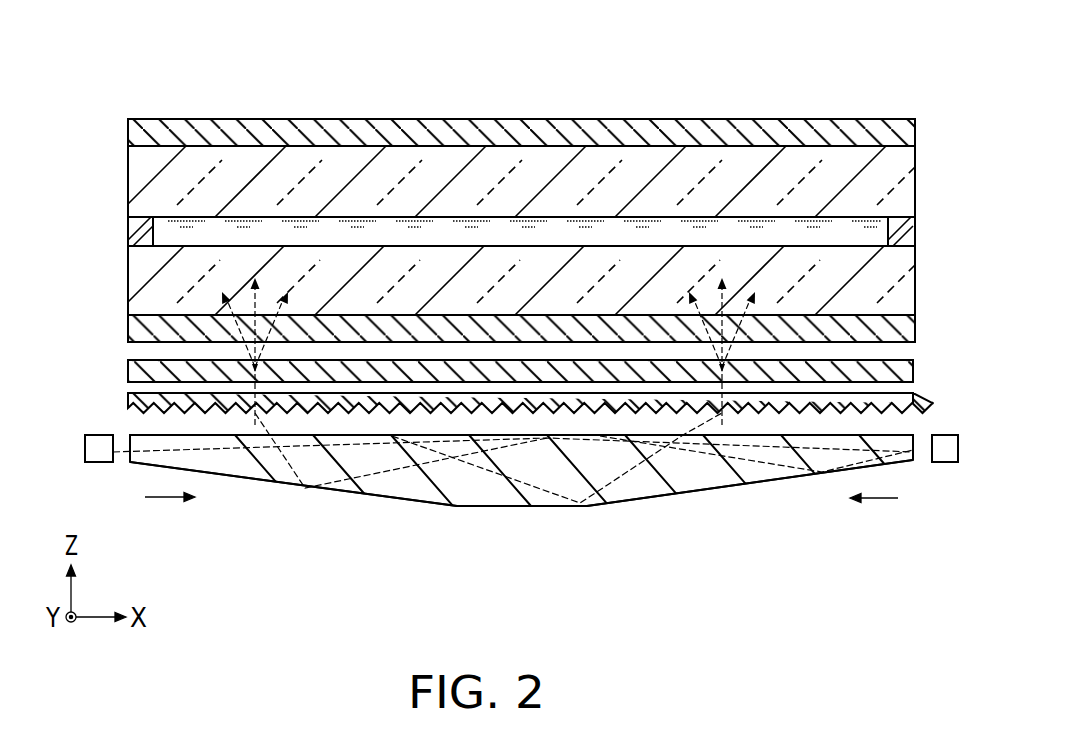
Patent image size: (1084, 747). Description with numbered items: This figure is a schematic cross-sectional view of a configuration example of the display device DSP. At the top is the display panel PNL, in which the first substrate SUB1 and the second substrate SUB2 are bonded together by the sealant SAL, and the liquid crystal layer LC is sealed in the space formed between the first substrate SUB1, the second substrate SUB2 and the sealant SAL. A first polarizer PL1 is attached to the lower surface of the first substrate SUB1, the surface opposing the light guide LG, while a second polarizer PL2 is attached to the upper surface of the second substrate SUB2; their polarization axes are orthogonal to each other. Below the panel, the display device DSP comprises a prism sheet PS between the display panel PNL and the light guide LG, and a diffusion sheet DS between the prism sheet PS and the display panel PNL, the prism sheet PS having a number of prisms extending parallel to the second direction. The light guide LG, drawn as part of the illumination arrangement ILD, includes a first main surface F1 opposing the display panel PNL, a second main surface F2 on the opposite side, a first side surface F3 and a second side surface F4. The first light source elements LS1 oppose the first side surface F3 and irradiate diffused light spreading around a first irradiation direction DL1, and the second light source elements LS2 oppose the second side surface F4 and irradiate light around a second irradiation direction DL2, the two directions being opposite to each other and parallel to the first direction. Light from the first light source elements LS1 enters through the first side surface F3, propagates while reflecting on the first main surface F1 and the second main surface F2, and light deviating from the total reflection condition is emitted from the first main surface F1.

The display device DSP is at (134, 80).
The display panel PNL is at (874, 106).
The second polarizer PL2 is at (128, 126).
The second substrate SUB2 is at (787, 165).
The liquid crystal layer LC is at (718, 235).
The first substrate SUB1 is at (641, 280).
The sealant SAL is at (128, 225).
The first polarizer PL1 is at (128, 327).
The diffusion sheet DS is at (128, 364).
The prism sheet PS is at (128, 397).
The illumination device ILD is at (334, 532).
The light guide LG is at (422, 488).
The first main surface F1 is at (731, 432).
The second main surface F2 is at (696, 500).
The first side surface F3 is at (125, 434).
The second side surface F4 is at (917, 434).
The first light source elements LS1 is at (100, 462).
The second light source elements LS2 is at (942, 462).
The first irradiation direction DL1 is at (193, 498).
The second irradiation direction DL2 is at (848, 499).